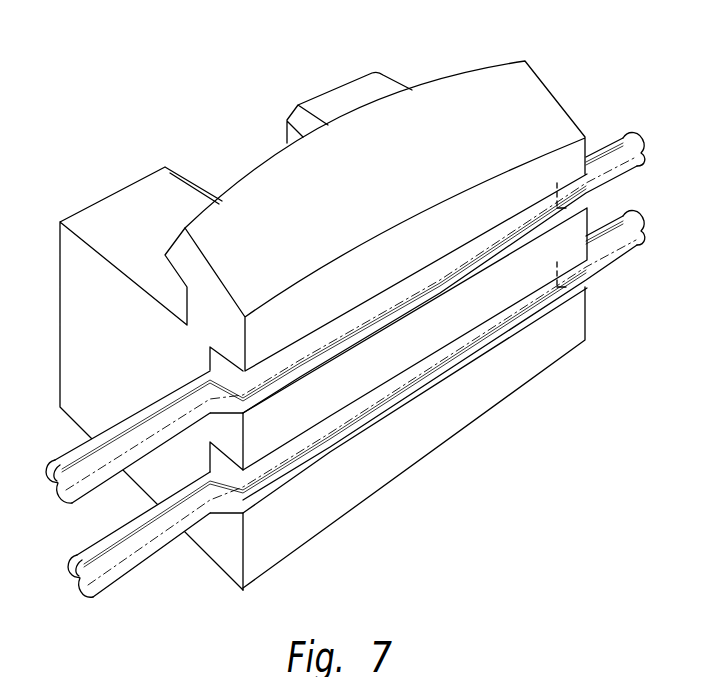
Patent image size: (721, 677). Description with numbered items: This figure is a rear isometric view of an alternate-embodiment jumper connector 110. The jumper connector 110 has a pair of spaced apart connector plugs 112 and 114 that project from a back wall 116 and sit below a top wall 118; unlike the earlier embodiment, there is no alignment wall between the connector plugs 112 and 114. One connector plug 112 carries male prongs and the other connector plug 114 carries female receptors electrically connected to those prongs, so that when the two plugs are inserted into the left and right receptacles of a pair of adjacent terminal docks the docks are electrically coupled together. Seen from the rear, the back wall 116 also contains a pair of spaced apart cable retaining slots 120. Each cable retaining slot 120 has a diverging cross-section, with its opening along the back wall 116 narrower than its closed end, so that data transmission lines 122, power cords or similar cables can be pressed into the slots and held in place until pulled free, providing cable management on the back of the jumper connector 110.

The jumper connector 110 is at (364, 304).
The connector plug 112 is at (347, 93).
The connector plug 114 is at (119, 205).
The back wall 116 is at (380, 467).
The top wall 118 is at (277, 170).
The cable retaining slots 120 is at (270, 492).
The data transmission lines 122 is at (624, 137).